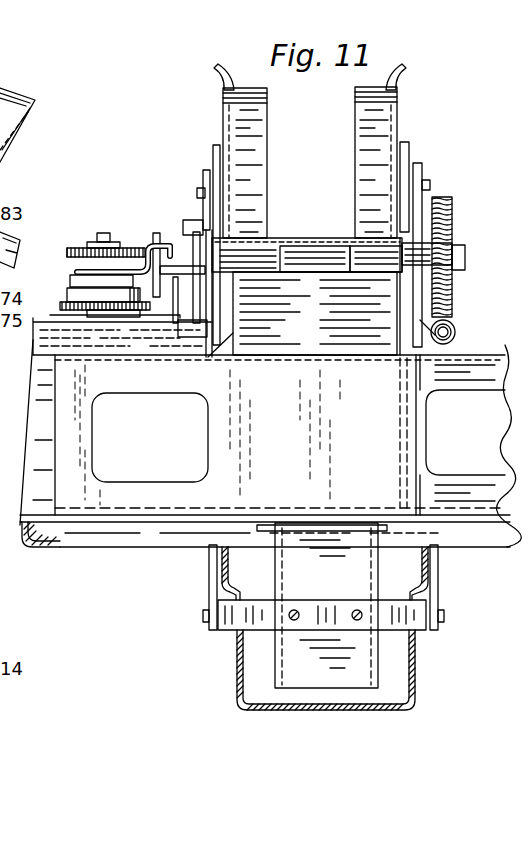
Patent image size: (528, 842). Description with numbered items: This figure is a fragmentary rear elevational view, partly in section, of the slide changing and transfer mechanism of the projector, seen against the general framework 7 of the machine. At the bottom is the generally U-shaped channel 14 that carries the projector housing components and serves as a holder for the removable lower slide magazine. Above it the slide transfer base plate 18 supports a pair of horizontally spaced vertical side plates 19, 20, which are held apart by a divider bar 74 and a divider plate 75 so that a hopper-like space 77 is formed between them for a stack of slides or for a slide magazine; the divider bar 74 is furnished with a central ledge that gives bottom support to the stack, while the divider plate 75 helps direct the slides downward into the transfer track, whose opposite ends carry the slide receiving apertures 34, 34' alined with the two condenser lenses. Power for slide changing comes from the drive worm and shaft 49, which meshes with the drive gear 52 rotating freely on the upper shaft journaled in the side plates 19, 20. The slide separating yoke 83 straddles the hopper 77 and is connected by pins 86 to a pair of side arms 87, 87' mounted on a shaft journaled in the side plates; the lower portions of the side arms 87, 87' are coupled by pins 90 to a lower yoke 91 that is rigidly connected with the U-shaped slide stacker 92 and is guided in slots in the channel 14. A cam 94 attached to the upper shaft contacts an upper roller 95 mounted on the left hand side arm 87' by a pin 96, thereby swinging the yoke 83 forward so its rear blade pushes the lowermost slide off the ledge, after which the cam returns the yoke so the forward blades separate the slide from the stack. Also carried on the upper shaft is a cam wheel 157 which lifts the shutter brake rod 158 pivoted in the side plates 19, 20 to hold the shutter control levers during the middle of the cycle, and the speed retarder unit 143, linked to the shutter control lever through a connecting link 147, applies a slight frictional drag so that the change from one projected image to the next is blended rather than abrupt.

The frame 7 is at (55, 420).
The U-shaped channel 14 is at (238, 677).
The slide transfer base plate 18 is at (75, 550).
The vertical side plate 19 is at (406, 78).
The vertical side plate 20 is at (222, 97).
The slide receiving aperture 34 is at (452, 435).
The slide receiving aperture 34' is at (150, 437).
The drive worm and shaft 49 is at (455, 330).
The drive gear 52 is at (447, 198).
The divider bar 74 is at (300, 279).
The divider plate 75 is at (347, 348).
The hopper-like space 77 is at (323, 180).
The slide separating yoke 83 is at (372, 259).
The pins 86 is at (204, 170).
The side arm 87 is at (451, 376).
The left hand side arm 87' is at (184, 372).
The pins 90 is at (203, 618).
The lower yoke 91 is at (295, 598).
The U-shaped slide stacker 92 is at (312, 689).
The cam 94 is at (197, 260).
The upper roller 95 is at (198, 190).
The pin 96 is at (188, 218).
The speed retarder unit 143 is at (67, 297).
The connecting link 147 is at (80, 272).
The cam wheel 157 is at (143, 245).
The shutter brake rod 158 is at (140, 243).